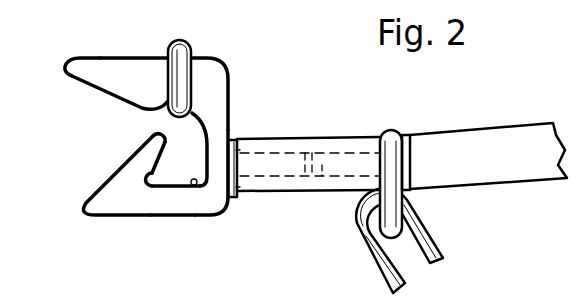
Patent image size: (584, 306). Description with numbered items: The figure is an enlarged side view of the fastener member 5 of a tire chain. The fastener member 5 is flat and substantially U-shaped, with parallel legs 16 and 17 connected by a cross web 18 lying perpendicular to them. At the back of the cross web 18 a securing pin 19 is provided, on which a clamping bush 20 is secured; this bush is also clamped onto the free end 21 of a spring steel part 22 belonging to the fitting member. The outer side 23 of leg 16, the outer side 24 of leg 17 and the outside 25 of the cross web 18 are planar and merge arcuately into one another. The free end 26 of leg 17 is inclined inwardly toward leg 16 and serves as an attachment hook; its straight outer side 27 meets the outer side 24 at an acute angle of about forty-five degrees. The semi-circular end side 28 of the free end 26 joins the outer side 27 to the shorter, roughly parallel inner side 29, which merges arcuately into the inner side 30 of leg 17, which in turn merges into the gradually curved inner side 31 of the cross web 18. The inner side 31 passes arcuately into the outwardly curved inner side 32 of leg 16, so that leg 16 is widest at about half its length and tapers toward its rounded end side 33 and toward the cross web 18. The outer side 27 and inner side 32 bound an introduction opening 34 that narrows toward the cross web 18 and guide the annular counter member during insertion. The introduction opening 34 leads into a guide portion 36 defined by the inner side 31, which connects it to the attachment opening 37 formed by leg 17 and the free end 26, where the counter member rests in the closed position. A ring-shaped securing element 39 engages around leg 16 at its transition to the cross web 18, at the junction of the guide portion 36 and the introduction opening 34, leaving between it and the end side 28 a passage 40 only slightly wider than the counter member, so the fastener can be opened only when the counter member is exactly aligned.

The fastener member 5 is at (256, 57).
The leg 16 is at (93, 42).
The leg 17 is at (150, 226).
The cross web 18 is at (219, 110).
The securing pin 19 is at (292, 162).
The clamping bush 20 is at (317, 147).
The free end 21 is at (327, 165).
The spring steel part 22 is at (355, 162).
The outer side 23 is at (148, 60).
The outer side 24 is at (196, 190).
The outside 25 is at (238, 175).
The free end 26 is at (143, 160).
The outer side 27 is at (110, 173).
The end side 28 is at (153, 137).
The inner side 29 is at (147, 187).
The inner side 30 is at (202, 184).
The inner side 31 is at (227, 132).
The inner side 32 is at (117, 105).
The end side 33 is at (65, 71).
The introduction opening 34 is at (100, 119).
The guide portion 36 is at (173, 137).
The attachment opening 37 is at (176, 165).
The securing element 39 is at (188, 50).
The passage 40 is at (157, 117).